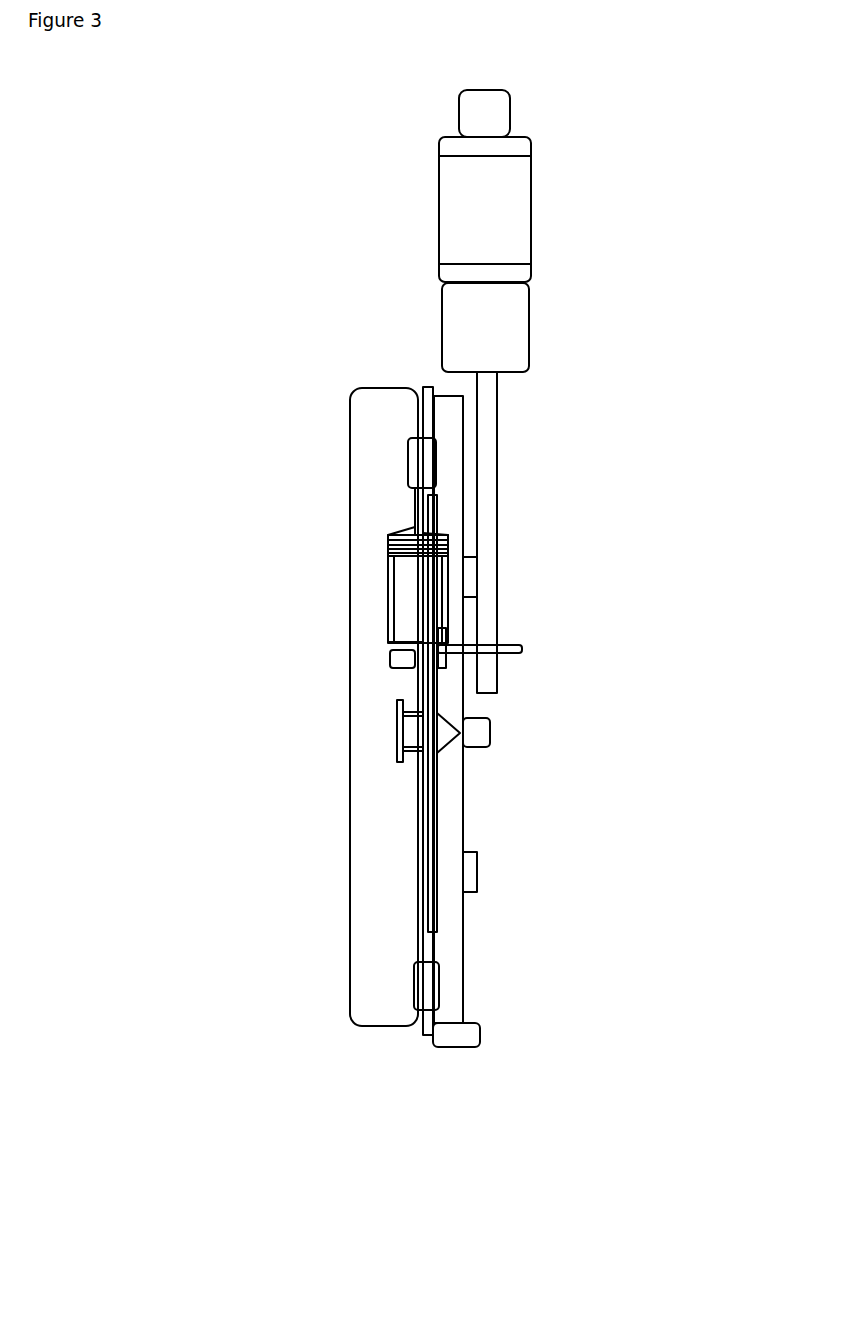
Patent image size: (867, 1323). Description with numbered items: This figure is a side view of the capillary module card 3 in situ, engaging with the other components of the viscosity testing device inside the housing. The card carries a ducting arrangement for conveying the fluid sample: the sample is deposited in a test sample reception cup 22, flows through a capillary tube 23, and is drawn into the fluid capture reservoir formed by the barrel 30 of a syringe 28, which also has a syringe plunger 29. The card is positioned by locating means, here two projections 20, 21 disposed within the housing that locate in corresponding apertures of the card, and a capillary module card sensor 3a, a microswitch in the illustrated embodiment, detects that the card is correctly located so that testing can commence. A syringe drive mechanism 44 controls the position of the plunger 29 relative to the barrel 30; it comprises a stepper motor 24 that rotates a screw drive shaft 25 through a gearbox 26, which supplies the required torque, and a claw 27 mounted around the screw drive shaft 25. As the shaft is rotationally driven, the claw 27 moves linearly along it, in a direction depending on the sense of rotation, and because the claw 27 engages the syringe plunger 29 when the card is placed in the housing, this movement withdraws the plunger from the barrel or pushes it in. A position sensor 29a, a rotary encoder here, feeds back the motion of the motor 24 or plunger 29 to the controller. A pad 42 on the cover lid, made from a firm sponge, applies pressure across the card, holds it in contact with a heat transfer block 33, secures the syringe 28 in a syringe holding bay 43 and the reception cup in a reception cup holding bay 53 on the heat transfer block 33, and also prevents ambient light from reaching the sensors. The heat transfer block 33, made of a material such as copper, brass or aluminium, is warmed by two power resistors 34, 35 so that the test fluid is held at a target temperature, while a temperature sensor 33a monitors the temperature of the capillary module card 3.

The capillary module card 3 is at (437, 1093).
The capillary module card sensor 3a is at (480, 1040).
The projection 20 is at (412, 447).
The projection 21 is at (416, 1012).
The test sample reception cup 22 is at (398, 712).
The capillary tube 23 is at (423, 777).
The stepper motor 24 is at (518, 182).
The screw drive shaft 25 is at (498, 455).
The gearbox 26 is at (518, 322).
The claw 27 is at (519, 646).
The syringe 28 is at (417, 522).
The syringe plunger 29 is at (393, 648).
The position sensor 29a is at (468, 100).
The syringe barrel 30 is at (393, 560).
The heat transfer block 33 is at (455, 915).
The temperature sensor 33a is at (483, 740).
The power resistor 34 is at (467, 572).
The power resistor 35 is at (470, 880).
The pad 42 is at (362, 890).
The syringe holding bay 43 is at (443, 638).
The syringe drive mechanism 44 is at (643, 432).
The reception cup holding bay 53 is at (465, 808).